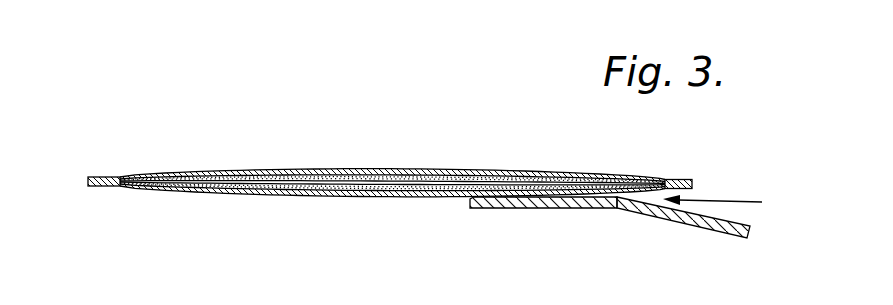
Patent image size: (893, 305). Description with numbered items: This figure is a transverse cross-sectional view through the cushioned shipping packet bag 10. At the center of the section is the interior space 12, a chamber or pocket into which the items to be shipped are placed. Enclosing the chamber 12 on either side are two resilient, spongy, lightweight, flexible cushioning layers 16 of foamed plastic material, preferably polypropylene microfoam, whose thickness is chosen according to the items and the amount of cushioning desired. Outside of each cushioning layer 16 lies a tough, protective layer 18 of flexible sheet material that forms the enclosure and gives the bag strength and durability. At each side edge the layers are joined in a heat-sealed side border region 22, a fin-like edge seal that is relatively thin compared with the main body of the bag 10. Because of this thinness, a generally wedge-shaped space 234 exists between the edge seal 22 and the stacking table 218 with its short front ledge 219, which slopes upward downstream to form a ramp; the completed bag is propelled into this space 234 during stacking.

The cushioned shipping packet bag 10 is at (299, 106).
The interior space 12 is at (375, 176).
The cushioning layers 16 is at (405, 172).
The protective layer 18 is at (466, 168).
The heat-sealed side border region 22 is at (101, 177).
The table 218 is at (510, 197).
The front ledge 219 is at (728, 221).
The wedge-shaped space 234 is at (736, 205).